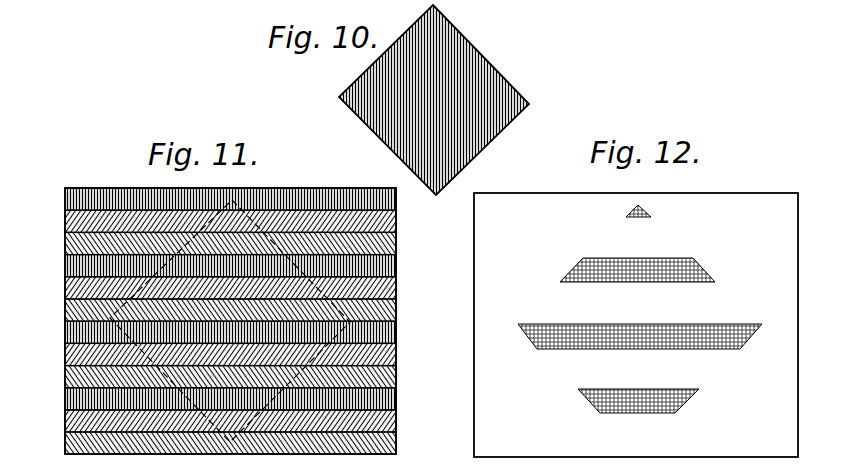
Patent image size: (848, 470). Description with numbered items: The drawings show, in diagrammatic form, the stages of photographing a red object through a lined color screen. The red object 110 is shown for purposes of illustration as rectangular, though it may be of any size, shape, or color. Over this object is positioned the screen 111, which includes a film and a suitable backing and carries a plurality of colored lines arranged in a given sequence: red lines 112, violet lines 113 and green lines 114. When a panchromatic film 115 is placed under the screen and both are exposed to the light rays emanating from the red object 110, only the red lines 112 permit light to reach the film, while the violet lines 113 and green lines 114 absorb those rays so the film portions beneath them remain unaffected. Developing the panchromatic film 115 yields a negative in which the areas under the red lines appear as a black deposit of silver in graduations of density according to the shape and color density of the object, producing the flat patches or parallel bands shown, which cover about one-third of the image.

In FIG. 10, the red object 110 is at (473, 46).
In FIG. 11, the screen 111 is at (96, 188).
In FIG. 11, the red lines 112 is at (230, 306).
In FIG. 11, the violet lines 113 is at (396, 229).
In FIG. 11, the green lines 114 is at (65, 247).
In FIG. 12, the panchromatic film 115 is at (732, 200).